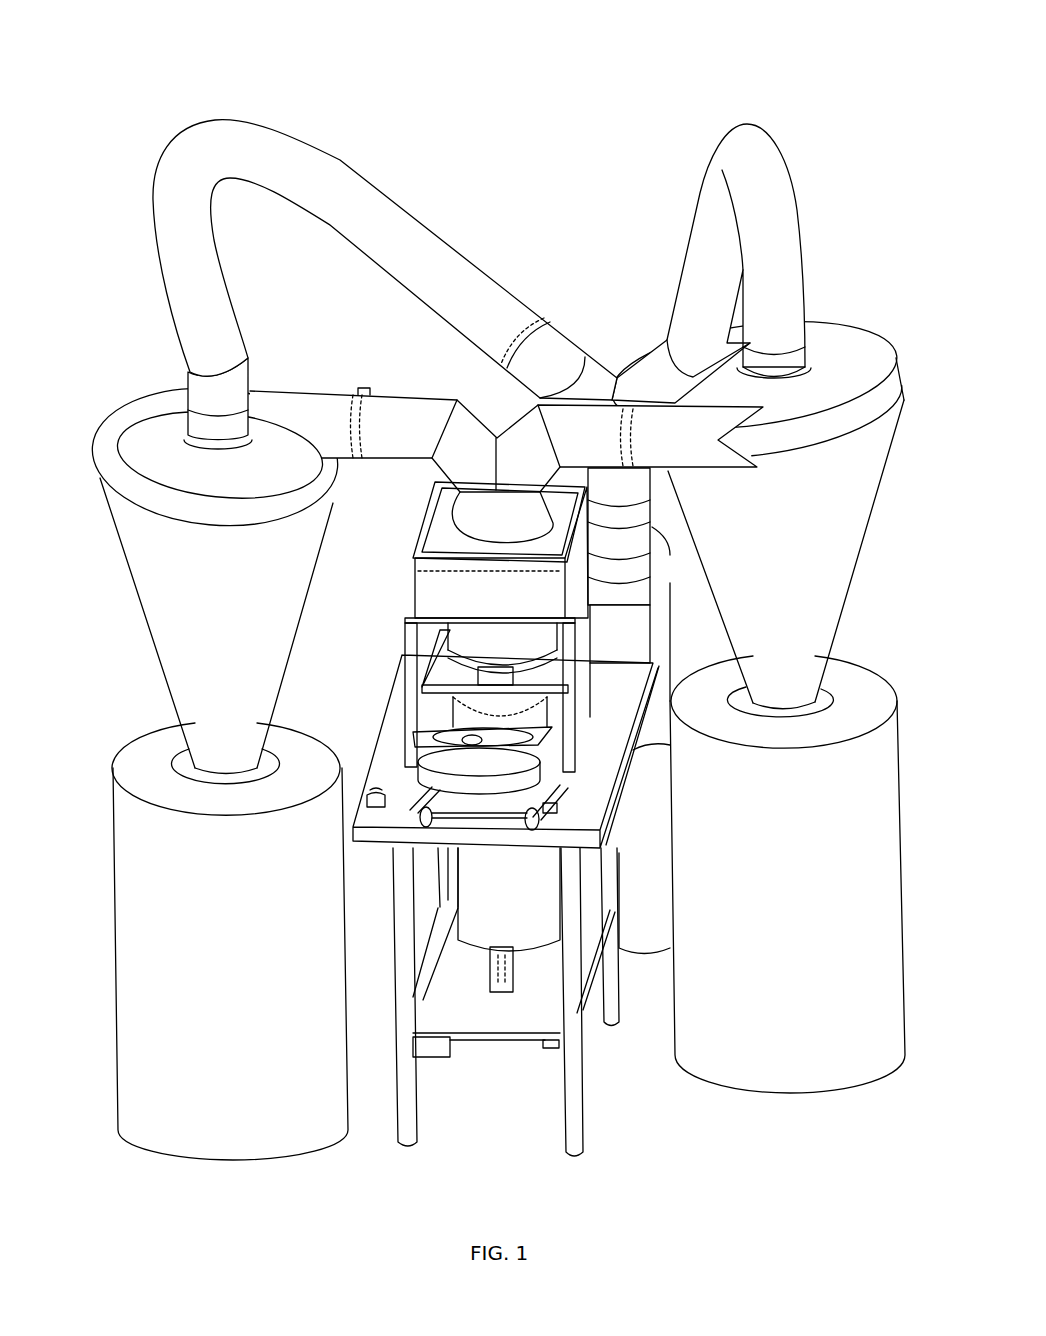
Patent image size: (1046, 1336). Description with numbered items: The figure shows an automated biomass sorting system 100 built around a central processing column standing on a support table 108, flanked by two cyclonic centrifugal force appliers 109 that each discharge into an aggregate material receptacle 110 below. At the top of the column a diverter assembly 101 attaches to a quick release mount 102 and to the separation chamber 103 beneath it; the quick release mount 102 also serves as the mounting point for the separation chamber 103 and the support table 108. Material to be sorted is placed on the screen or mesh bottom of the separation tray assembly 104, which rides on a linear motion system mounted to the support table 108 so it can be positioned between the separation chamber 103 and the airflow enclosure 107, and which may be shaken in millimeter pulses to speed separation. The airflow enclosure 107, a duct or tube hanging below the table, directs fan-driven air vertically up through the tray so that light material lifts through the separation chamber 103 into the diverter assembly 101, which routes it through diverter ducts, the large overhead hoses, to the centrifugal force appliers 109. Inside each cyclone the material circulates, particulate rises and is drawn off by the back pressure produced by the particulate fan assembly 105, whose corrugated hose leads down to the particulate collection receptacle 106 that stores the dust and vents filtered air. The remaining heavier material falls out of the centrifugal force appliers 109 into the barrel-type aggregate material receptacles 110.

The automated biomass sorting system 100 is at (504, 584).
The diverter assembly 101 is at (476, 521).
The quick release mount 102 is at (470, 602).
The separation chamber 103 is at (478, 641).
The separation tray assembly 104 is at (476, 744).
The particulate fan assembly 105 is at (654, 641).
The particulate collection receptacle 106 is at (647, 897).
The airflow enclosure 107 is at (520, 929).
The support table 108 is at (391, 818).
The centrifugal force appliers 109 is at (772, 596).
The aggregate material receptacles 110 is at (772, 864).